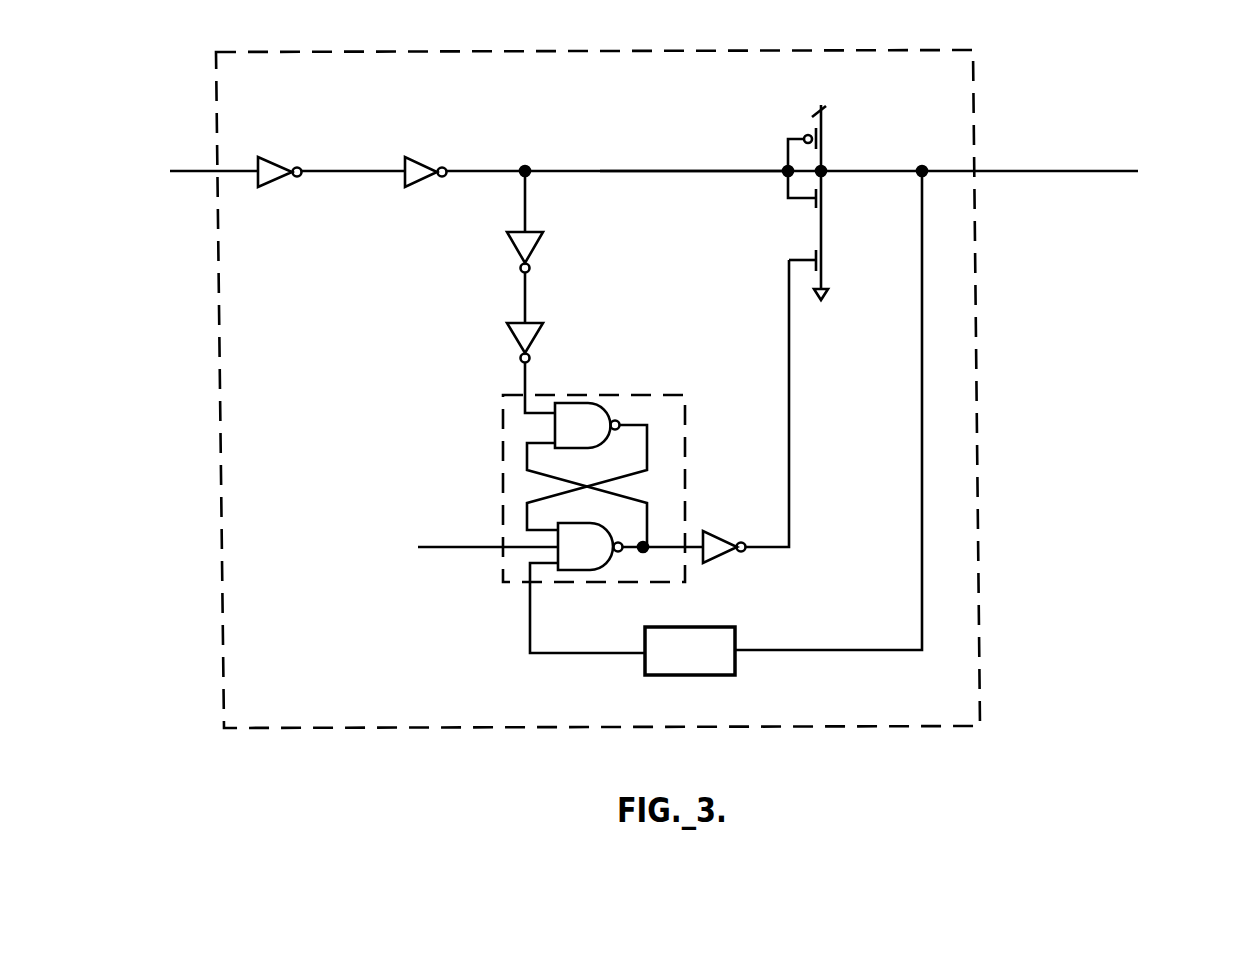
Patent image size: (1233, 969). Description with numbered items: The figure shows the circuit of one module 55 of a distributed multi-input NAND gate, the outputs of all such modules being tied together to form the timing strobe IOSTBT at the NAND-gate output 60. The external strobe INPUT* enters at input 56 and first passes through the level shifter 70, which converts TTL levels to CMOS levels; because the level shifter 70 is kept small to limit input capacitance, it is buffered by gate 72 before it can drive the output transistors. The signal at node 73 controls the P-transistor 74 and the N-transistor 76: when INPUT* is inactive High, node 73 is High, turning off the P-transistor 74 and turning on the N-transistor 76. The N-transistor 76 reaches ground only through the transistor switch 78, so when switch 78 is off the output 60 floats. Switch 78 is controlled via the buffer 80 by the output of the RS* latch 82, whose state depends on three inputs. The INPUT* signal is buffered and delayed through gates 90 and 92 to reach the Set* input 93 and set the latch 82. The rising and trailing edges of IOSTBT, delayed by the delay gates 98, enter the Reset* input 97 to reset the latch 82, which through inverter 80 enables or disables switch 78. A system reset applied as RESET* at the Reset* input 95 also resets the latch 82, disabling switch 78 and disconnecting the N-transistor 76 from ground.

The module 55 is at (981, 677).
The INPUT* input 56 is at (200, 171).
The NAND-gate output 60 is at (1078, 170).
The level shifter 70 is at (274, 158).
The buffer gate 72 is at (420, 158).
The node 73 is at (697, 171).
The P-transistor 74 is at (827, 135).
The N-transistor 76 is at (826, 202).
The transistor switch 78 is at (826, 259).
The buffer 80 is at (719, 529).
The RS* latch 82 is at (604, 393).
The gate 90 is at (539, 249).
The gate 92 is at (539, 338).
The Set* input 93 is at (521, 360).
The Reset* input 95 is at (466, 547).
The Reset* input 97 is at (530, 600).
The delay gates 98 is at (738, 626).